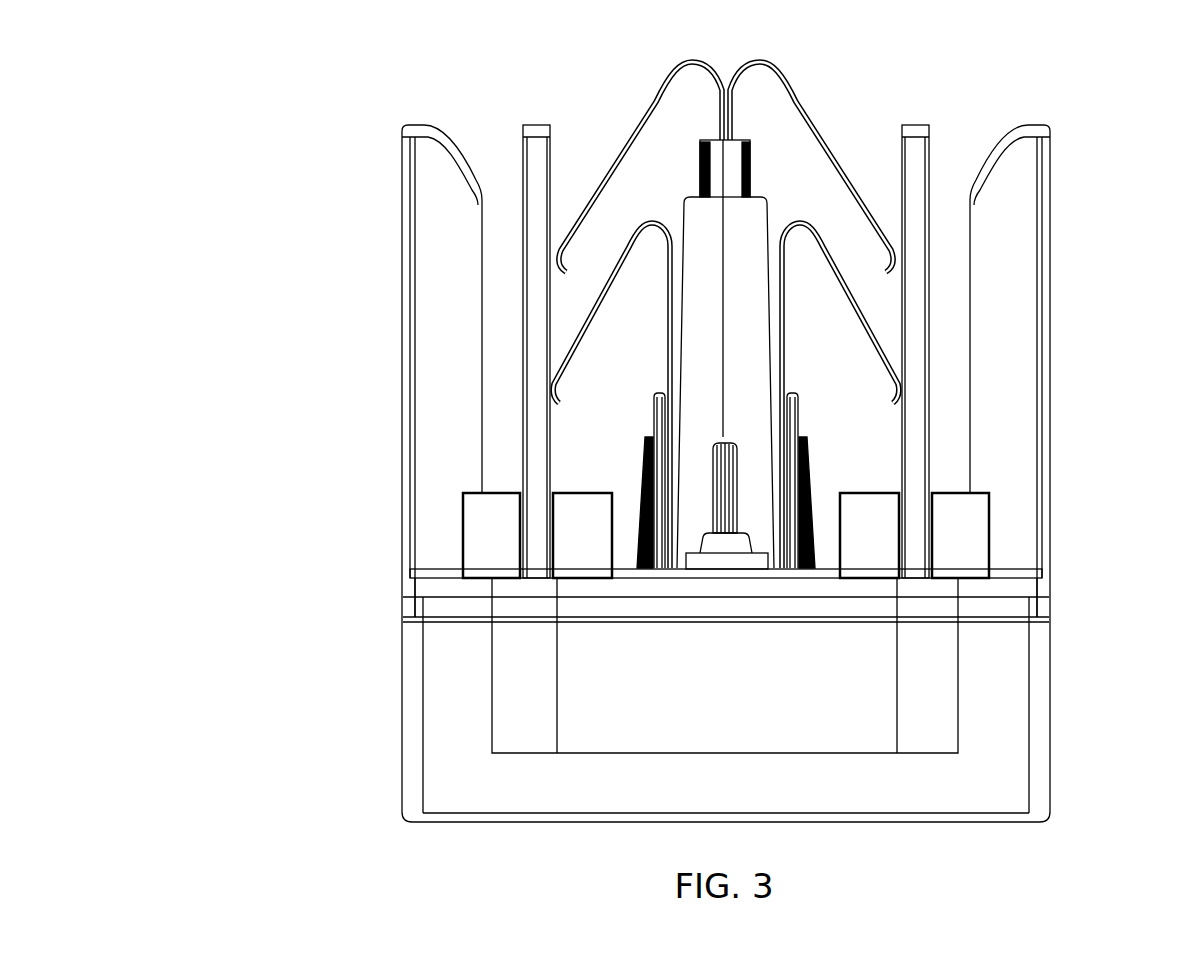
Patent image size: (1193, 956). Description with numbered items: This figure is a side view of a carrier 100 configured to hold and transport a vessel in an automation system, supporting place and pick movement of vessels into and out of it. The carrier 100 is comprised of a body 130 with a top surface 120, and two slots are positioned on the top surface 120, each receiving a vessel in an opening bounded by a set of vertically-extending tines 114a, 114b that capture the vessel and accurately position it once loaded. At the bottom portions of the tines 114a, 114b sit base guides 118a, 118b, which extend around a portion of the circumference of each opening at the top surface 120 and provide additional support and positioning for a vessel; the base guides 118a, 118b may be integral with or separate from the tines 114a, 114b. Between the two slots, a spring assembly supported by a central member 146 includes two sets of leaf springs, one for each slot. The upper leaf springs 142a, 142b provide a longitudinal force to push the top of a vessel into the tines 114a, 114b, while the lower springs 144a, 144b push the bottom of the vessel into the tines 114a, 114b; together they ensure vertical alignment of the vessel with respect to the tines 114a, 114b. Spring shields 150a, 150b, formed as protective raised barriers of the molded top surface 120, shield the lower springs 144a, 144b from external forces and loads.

The carrier 100 is at (213, 138).
The tines 114a is at (527, 122).
The tines 114b is at (925, 123).
The base guide 118a is at (492, 527).
The base guide 118b is at (963, 538).
The top surface 120 is at (1008, 572).
The body 130 is at (1005, 748).
The upper leaf spring 142a is at (648, 103).
The upper leaf spring 142b is at (803, 102).
The lower spring 144a is at (612, 268).
The lower spring 144b is at (830, 252).
The member 146 is at (735, 157).
The spring shield 150a is at (645, 462).
The spring shield 150b is at (807, 462).